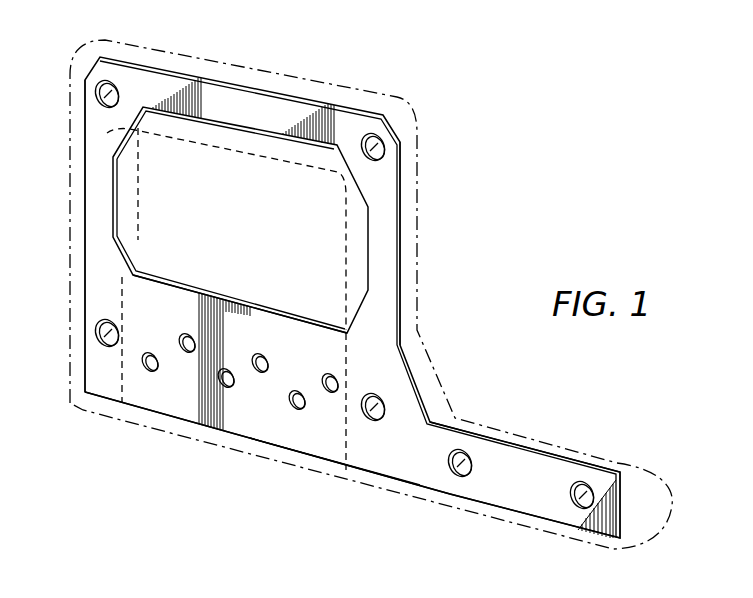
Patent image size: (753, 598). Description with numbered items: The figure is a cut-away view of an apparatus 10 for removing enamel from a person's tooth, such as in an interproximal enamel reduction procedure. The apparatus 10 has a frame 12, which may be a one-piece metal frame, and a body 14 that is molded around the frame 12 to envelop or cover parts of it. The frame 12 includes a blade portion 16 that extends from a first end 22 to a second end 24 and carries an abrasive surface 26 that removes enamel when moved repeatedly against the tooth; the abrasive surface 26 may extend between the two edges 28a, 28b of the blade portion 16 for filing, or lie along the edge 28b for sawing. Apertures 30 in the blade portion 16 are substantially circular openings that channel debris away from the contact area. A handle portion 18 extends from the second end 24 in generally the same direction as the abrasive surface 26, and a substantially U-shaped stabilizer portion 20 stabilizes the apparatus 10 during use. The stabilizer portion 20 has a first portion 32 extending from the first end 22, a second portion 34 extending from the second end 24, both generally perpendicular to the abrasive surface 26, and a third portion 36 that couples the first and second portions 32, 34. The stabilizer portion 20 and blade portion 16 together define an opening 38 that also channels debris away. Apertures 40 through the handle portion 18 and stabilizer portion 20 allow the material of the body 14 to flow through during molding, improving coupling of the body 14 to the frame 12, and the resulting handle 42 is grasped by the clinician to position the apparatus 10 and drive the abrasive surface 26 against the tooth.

The apparatus 10 is at (540, 200).
The frame 12 is at (86, 140).
The body 14 is at (70, 252).
The blade portion 16 is at (200, 432).
The handle portion 18 is at (537, 472).
The stabilizer portion 20 is at (262, 116).
The first end 22 is at (108, 380).
The second end 24 is at (360, 448).
The abrasive surface 26 is at (280, 434).
The edge of blade portion 28a is at (168, 280).
The edge of blade portion 28b is at (330, 464).
The apertures 30 is at (180, 342).
The first portion 32 is at (100, 208).
The second portion 34 is at (380, 255).
The third portion 36 is at (236, 106).
The opening 38 is at (300, 166).
The apertures 40 is at (100, 96).
The handle 42 is at (590, 442).